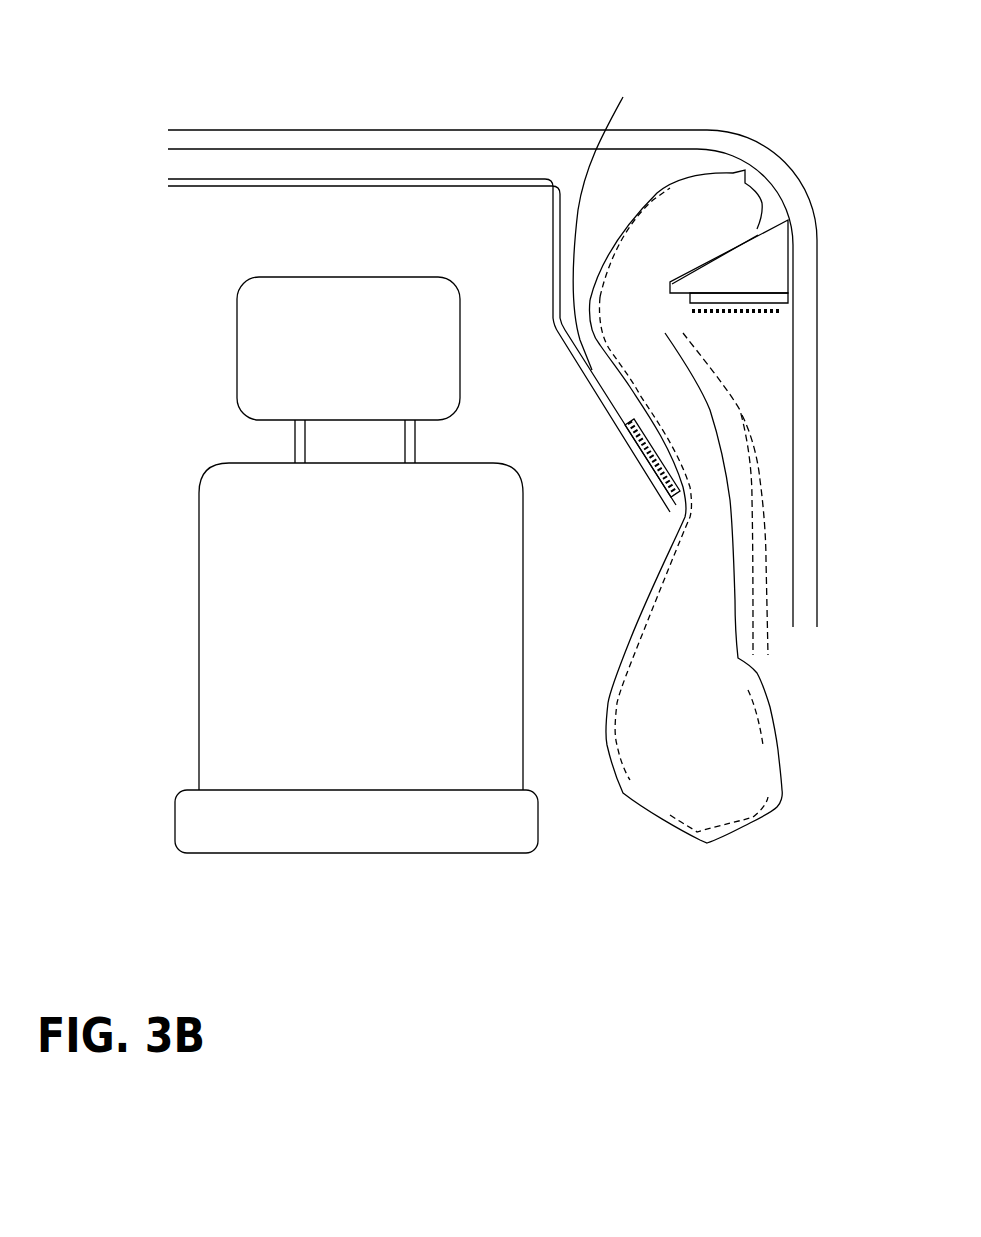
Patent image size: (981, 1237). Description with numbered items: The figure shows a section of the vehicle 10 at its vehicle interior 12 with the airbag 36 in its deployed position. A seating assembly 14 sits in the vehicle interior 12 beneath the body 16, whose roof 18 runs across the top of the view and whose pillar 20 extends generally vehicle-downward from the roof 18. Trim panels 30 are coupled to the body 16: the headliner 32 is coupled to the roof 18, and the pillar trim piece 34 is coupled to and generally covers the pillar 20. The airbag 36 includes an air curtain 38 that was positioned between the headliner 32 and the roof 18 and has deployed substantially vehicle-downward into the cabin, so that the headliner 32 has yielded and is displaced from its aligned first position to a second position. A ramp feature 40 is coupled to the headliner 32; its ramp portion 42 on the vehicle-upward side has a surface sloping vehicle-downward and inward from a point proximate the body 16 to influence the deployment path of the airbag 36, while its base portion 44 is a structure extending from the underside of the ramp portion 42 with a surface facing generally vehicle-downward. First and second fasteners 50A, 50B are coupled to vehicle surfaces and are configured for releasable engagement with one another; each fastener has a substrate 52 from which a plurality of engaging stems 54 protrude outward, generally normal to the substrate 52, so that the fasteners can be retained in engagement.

The vehicle 10 is at (312, 108).
The vehicle interior 12 is at (285, 217).
The seating assembly 14 is at (335, 610).
The body 16 is at (518, 122).
The roof 18 is at (450, 130).
The pillar 20 is at (808, 422).
The trim panel 30 is at (345, 186).
The headliner 32 is at (610, 223).
The pillar trim piece 34 is at (732, 410).
The airbag 36 is at (690, 233).
The air curtain 38 is at (694, 738).
The ramp feature 40 is at (747, 283).
The ramp portion 42 is at (764, 235).
The base portion 44 is at (770, 297).
The first fastener 50A is at (644, 480).
The second fastener 50B is at (796, 307).
The substrate 52 is at (767, 317).
The engaging stems 54 is at (747, 317).